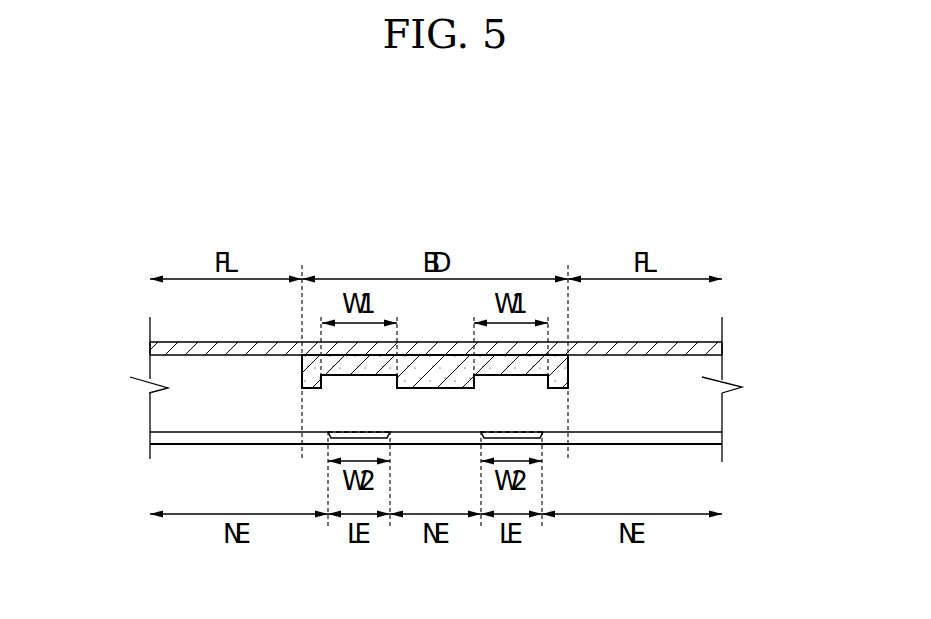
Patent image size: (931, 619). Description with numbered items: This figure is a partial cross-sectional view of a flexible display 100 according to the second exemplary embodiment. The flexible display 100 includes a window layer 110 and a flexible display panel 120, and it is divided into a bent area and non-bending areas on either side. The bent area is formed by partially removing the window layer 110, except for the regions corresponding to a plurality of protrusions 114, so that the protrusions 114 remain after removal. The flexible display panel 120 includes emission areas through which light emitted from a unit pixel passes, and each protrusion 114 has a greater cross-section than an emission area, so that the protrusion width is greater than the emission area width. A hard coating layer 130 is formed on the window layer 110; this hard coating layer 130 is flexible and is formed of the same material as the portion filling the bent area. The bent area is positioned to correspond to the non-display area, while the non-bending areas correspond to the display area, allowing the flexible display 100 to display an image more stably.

The flexible display 100 is at (351, 203).
The window layer 110 is at (710, 398).
The protrusions 114 is at (350, 375).
The flexible display panel 120 is at (717, 438).
The hard coating layer 130 is at (710, 350).